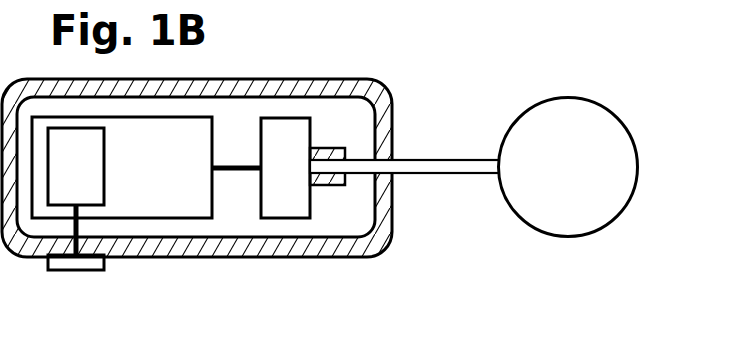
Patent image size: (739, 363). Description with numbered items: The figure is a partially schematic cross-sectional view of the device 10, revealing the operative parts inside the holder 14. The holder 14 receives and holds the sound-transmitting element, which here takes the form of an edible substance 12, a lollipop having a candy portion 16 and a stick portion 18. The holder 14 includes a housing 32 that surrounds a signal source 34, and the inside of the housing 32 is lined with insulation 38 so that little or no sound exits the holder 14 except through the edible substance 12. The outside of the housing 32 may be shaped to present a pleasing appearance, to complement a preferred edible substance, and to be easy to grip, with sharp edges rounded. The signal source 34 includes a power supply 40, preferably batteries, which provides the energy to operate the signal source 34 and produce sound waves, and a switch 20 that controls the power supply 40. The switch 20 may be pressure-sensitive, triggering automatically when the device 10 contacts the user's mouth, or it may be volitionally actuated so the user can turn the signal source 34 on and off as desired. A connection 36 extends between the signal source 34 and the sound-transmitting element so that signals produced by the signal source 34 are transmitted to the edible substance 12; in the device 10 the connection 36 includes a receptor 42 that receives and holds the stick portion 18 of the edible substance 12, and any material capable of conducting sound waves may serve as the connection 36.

The device 10 is at (512, 305).
The edible substance 12 is at (469, 82).
The holder 14 is at (251, 300).
The candy portion 16 is at (579, 172).
The stick portion 18 is at (458, 175).
The switch 20 is at (77, 272).
The housing 32 is at (353, 258).
The signal source 34 is at (184, 178).
The connection 36 is at (299, 180).
The insulation 38 is at (318, 245).
The power supply 40 is at (91, 178).
The receptor 42 is at (323, 187).